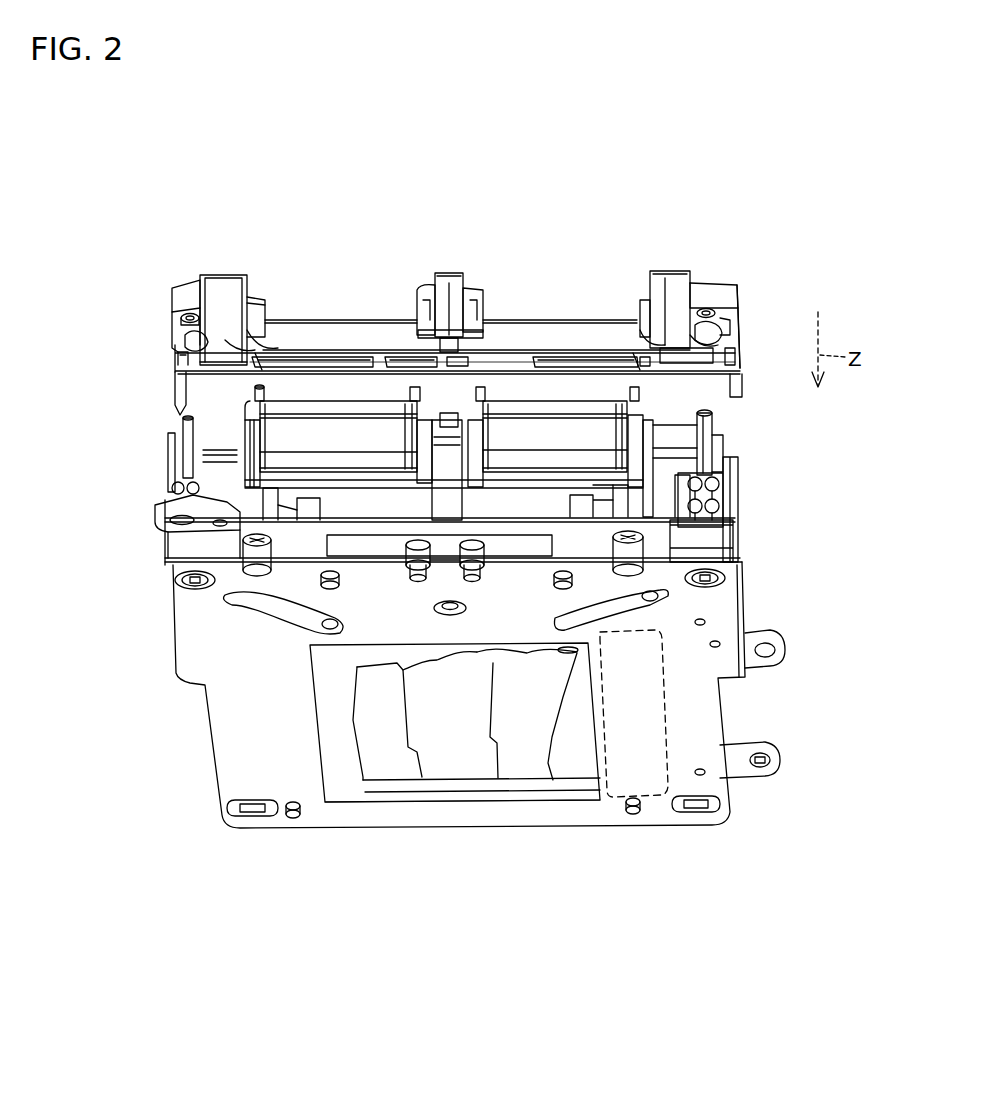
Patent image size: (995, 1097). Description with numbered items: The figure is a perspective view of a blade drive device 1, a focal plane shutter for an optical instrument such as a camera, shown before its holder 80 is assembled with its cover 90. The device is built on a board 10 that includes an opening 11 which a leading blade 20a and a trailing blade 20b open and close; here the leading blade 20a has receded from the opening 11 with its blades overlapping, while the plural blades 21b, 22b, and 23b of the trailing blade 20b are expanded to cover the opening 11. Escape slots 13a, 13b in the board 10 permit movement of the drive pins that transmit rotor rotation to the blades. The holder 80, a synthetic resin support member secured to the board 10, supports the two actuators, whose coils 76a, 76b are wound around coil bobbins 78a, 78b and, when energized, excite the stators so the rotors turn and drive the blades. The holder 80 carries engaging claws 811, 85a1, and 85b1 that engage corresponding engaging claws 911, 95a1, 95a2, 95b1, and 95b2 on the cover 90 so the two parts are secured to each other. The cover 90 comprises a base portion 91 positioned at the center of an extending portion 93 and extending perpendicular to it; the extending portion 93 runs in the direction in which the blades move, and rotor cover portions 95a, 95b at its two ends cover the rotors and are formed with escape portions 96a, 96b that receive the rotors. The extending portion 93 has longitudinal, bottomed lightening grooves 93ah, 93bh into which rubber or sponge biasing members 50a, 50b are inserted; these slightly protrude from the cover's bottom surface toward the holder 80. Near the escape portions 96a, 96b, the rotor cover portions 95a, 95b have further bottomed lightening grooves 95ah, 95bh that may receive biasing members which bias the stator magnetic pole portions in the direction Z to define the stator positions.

The blade drive device 1 is at (686, 168).
The board 10 is at (700, 843).
The opening 11 is at (583, 790).
The escape slot 13a is at (672, 603).
The escape slot 13b is at (230, 615).
The leading blade 20a is at (670, 733).
The trailing blade 20b is at (560, 888).
The blade 21b is at (547, 742).
The blade 22b is at (460, 752).
The blade 23b is at (393, 748).
The biasing member 50a is at (578, 357).
The biasing member 50b is at (325, 357).
The coil 76a is at (527, 460).
The coil 76b is at (360, 450).
The coil bobbin 78a is at (706, 410).
The coil bobbin 78b is at (255, 405).
The holder 80 is at (745, 453).
The engaging claw 811 is at (460, 283).
The engaging claw 85a1 is at (740, 470).
The engaging claw 85b1 is at (203, 462).
The cover 90 is at (745, 284).
The base portion 91 is at (458, 287).
The engaging claw 911 is at (440, 345).
The extending portion 93 is at (404, 335).
The lightening groove 93ah is at (636, 357).
The lightening groove 93bh is at (278, 360).
The rotor cover portion 95a is at (728, 295).
The engaging claw 95a1 is at (665, 330).
The engaging claw 95a2 is at (740, 388).
The lightening groove 95ah is at (715, 310).
The rotor cover portion 95b is at (188, 293).
The engaging claw 95b1 is at (230, 345).
The engaging claw 95b2 is at (177, 392).
The lightening groove 95bh is at (185, 315).
The escape portion 96a is at (707, 310).
The escape portion 96b is at (190, 345).